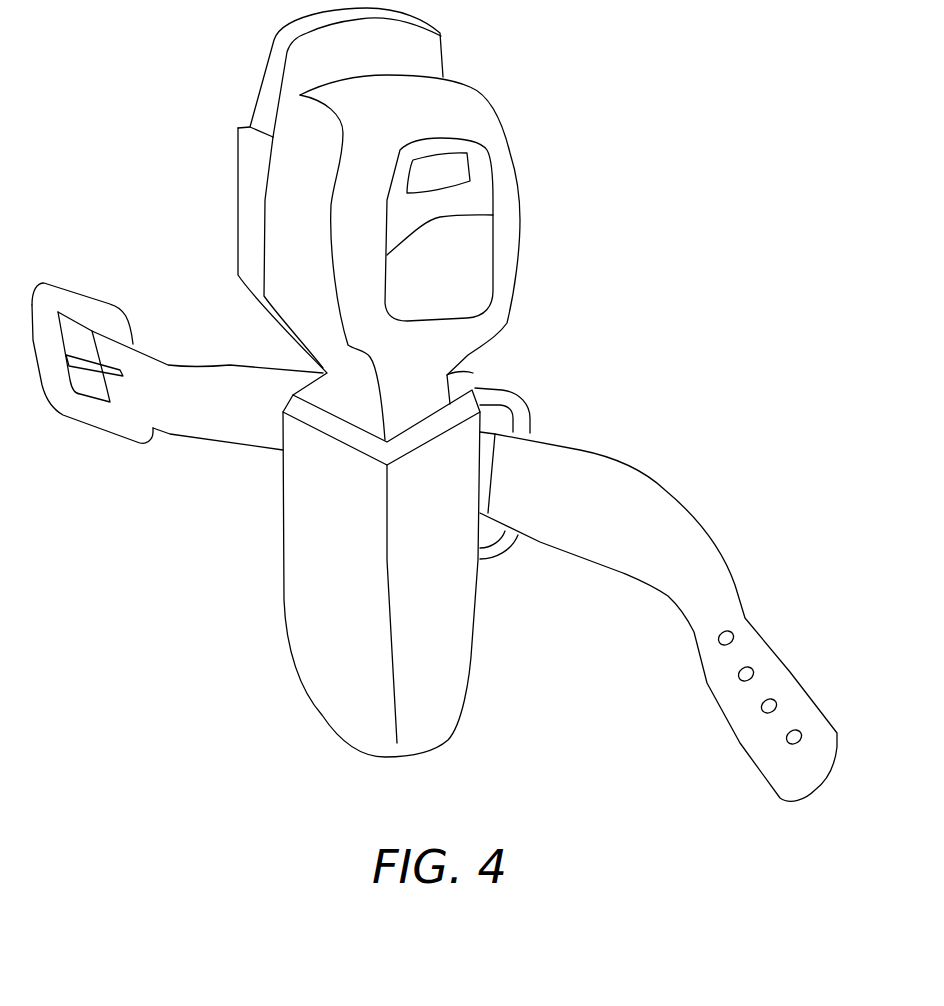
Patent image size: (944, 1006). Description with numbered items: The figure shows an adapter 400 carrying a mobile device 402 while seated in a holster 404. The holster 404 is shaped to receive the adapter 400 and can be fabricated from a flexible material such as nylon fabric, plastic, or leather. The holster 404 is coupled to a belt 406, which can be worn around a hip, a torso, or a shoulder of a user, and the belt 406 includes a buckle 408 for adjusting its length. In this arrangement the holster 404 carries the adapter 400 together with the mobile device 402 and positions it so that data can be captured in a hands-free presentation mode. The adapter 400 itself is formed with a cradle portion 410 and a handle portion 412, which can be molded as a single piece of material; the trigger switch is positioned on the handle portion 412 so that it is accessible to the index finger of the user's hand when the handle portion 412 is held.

The adapter 400 is at (165, 138).
The mobile device 402 is at (273, 37).
The holster 404 is at (476, 613).
The belt 406 is at (612, 462).
The buckle 408 is at (80, 285).
The cradle portion 410 is at (492, 114).
The handle portion 412 is at (473, 373).